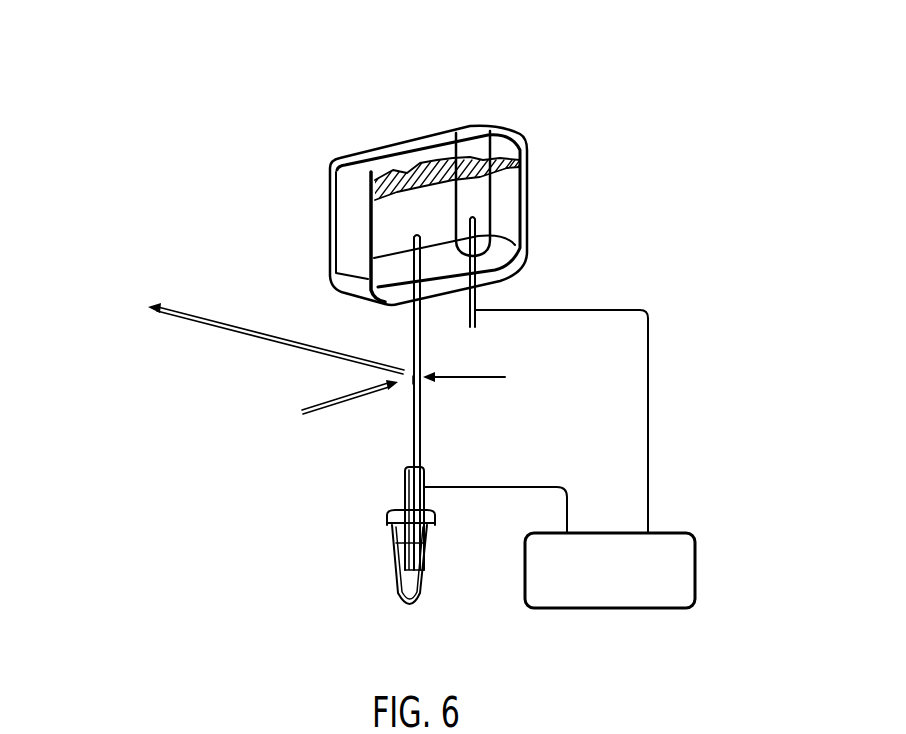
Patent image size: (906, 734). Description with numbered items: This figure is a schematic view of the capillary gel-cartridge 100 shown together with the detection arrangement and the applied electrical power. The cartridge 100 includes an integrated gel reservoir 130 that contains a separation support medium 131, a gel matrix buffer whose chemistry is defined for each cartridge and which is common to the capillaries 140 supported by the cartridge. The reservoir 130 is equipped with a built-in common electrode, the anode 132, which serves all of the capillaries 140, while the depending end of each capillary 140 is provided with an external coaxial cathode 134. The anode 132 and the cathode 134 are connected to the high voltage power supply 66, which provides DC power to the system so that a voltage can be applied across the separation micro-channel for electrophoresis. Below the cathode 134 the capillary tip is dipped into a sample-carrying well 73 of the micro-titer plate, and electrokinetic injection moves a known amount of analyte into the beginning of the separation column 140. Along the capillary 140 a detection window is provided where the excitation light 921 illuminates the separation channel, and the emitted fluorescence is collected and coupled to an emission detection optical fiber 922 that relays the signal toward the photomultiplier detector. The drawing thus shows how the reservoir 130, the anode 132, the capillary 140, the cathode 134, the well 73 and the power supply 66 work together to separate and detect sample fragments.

The gel-cartridge 100 is at (528, 128).
The gel reservoir 130 is at (363, 148).
The separation support medium 131 is at (473, 208).
The anode 132 is at (490, 253).
The capillary 140 is at (433, 433).
The coaxial cathode 134 is at (400, 488).
The sample well 73 is at (433, 553).
The power supply 66 is at (695, 572).
The excitation light 921 is at (311, 419).
The emission detection optical fiber 922 is at (238, 340).